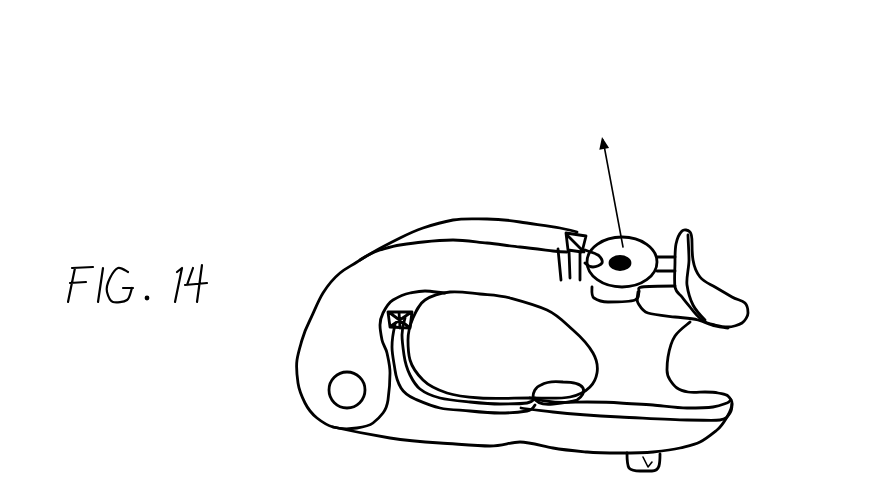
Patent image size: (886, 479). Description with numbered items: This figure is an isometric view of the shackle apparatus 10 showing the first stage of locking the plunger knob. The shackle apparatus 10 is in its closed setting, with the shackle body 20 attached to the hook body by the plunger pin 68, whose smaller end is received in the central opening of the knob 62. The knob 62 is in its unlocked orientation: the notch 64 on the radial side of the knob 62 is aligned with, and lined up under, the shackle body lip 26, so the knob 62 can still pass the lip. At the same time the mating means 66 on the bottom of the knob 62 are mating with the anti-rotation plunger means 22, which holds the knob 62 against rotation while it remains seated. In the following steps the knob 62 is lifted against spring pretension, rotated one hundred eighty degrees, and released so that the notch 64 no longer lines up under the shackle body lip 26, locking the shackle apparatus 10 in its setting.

The shackle apparatus 10 is at (186, 92).
The shackle body 20 is at (437, 265).
The anti-rotation plunger means 22 is at (690, 322).
The shackle body lip 26 is at (563, 231).
The knob 62 is at (643, 247).
The notch 64 is at (585, 248).
The mating means 66 is at (659, 242).
The plunger pin 68 is at (653, 478).